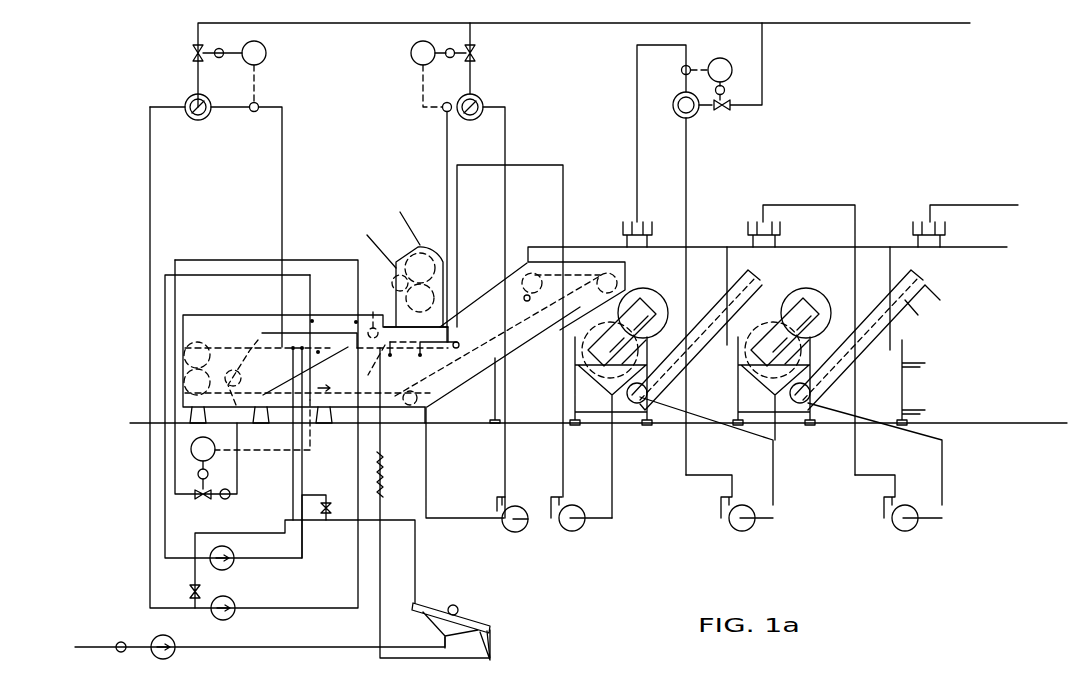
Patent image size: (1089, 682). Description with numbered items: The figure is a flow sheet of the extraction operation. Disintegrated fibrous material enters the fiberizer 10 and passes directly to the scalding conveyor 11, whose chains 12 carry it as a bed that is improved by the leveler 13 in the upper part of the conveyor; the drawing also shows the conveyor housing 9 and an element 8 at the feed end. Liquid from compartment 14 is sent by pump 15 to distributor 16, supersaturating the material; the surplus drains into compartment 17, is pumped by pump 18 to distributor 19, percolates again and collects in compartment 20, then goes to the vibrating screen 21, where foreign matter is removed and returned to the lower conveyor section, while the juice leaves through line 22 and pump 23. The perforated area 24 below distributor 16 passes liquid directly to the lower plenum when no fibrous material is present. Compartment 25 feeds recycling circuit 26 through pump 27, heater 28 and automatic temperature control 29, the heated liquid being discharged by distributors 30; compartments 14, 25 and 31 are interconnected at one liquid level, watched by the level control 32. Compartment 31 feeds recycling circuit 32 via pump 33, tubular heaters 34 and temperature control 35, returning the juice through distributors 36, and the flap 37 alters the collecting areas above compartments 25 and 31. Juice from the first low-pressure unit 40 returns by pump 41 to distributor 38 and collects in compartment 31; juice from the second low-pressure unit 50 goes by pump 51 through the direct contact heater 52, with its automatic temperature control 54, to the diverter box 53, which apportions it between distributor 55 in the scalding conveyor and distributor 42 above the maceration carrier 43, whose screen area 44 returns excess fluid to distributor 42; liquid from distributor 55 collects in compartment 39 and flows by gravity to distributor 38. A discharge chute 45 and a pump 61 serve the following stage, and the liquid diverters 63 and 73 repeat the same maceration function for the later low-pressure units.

The agitator arm 8 is at (283, 390).
The treatment tank 9 is at (315, 369).
The fiberizer 10 is at (407, 269).
The scalding conveyor 11 is at (217, 318).
The chains 12 is at (456, 320).
The leveler 13 is at (373, 314).
The compartment 14 is at (272, 414).
The pump 15 is at (242, 510).
The distributor 16 is at (356, 321).
The compartment 17 is at (318, 352).
The pump 18 is at (248, 422).
The distributor 19 is at (322, 304).
The compartment 20 is at (282, 345).
The vibrating screen 21 is at (454, 628).
The line 22 is at (260, 634).
The pump 23 is at (162, 638).
The area 24 is at (419, 501).
The compartment 25 is at (342, 412).
The recycling circuit 26 is at (302, 564).
The pump 27 is at (254, 363).
The heater 28 is at (216, 214).
The automatic temperature control 29 is at (246, 67).
The distributors 30 is at (305, 452).
The compartment 31 is at (458, 380).
The recycling circuit 32 is at (209, 455).
The pump 33 is at (481, 469).
The tubular heaters 34 is at (503, 299).
The automatic temperature control 35 is at (427, 65).
The distributors 36 is at (400, 357).
The flap 37 is at (410, 406).
The distributor 38 is at (459, 348).
The compartment 39 is at (560, 335).
The first low-pressure unit 40 is at (576, 360).
The pump 41 is at (581, 519).
The distributor 42 is at (655, 386).
The maceration carrier 43 is at (712, 381).
The screen area 44 is at (732, 340).
The drain chute 45 is at (714, 432).
The second low-pressure unit 50 is at (755, 337).
The pump 51 is at (733, 508).
The direct contact heater 52 is at (694, 113).
The diverter box 53 is at (627, 225).
The automatic temperature control 54 is at (726, 108).
The distributor 55 is at (530, 300).
The pump 61 is at (899, 441).
The liquid diverter 63 is at (794, 339).
The liquid diverter 73 is at (957, 225).